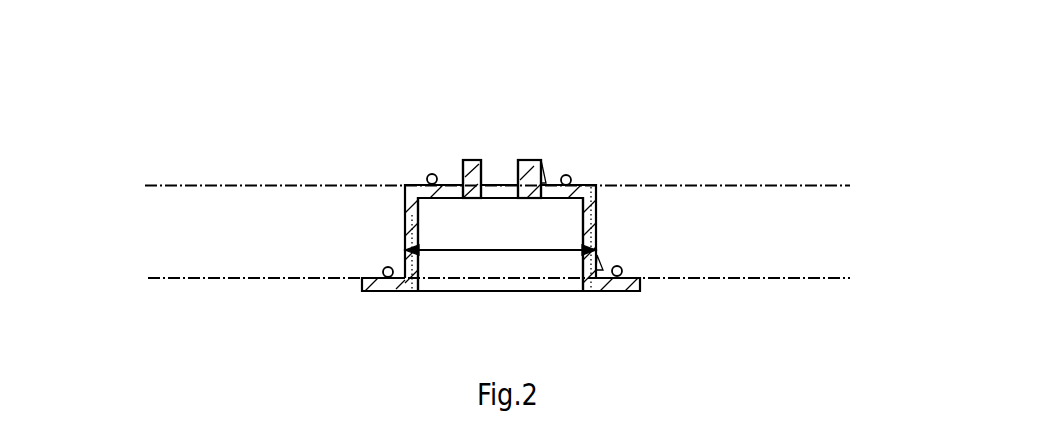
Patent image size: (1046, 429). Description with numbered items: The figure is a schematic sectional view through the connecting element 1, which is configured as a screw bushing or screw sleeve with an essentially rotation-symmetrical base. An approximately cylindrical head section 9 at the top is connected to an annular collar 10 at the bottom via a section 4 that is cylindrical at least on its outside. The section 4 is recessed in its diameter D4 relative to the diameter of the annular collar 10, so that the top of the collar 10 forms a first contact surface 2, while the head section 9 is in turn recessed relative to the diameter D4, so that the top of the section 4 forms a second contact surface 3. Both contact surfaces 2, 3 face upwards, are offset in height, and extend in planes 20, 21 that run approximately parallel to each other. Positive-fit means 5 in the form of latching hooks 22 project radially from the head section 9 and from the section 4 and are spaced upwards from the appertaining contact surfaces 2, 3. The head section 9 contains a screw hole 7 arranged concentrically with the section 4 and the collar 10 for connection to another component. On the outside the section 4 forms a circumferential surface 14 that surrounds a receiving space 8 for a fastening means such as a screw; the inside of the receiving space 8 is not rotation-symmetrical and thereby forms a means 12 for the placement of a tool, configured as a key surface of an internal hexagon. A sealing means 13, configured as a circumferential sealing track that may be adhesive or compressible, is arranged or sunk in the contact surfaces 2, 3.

The connecting element 1 is at (228, 252).
The first contact surface 2 is at (624, 276).
The second contact surface 3 is at (592, 183).
The section 4 is at (424, 226).
The circumferential surface 14 is at (405, 248).
The positive-fit means 5 is at (618, 162).
The latching hooks 22 is at (538, 163).
The screw hole 7 is at (498, 172).
The receiving space 8 is at (510, 280).
The means for the placement of a tool 12 is at (546, 262).
The head section 9 is at (542, 145).
The annular collar 10 is at (377, 297).
The sealing means 13 is at (429, 175).
The plane 20 is at (318, 184).
The plane 21 is at (698, 280).
The diameter of the section D4 is at (472, 252).